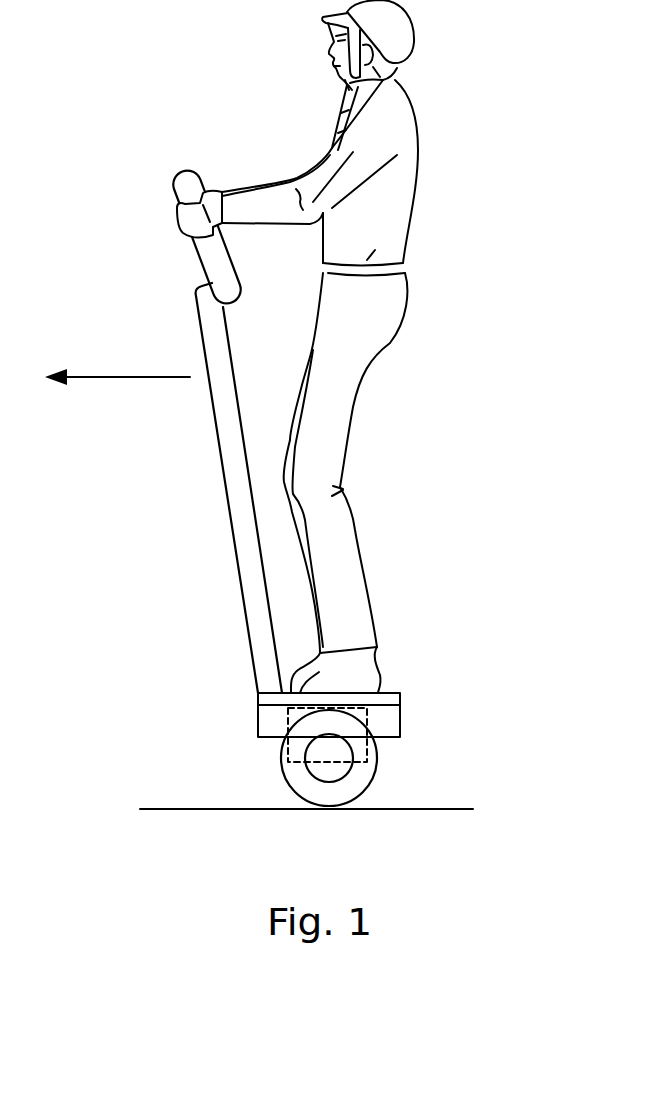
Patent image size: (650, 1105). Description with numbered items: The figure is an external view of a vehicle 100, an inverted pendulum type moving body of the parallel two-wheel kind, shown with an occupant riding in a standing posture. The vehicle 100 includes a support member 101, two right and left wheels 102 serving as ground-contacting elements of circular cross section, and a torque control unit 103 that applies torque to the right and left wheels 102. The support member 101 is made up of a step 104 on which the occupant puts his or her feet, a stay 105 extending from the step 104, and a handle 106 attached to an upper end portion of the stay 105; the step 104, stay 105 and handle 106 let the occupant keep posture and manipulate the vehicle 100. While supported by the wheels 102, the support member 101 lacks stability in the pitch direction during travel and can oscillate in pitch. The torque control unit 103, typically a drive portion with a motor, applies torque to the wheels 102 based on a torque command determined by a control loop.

The vehicle 100 is at (103, 246).
The support member 101 is at (403, 720).
The right and left wheels 102 is at (378, 772).
The torque control unit 103 is at (262, 737).
The step 104 is at (400, 692).
The stay 105 is at (228, 483).
The handle 106 is at (177, 167).